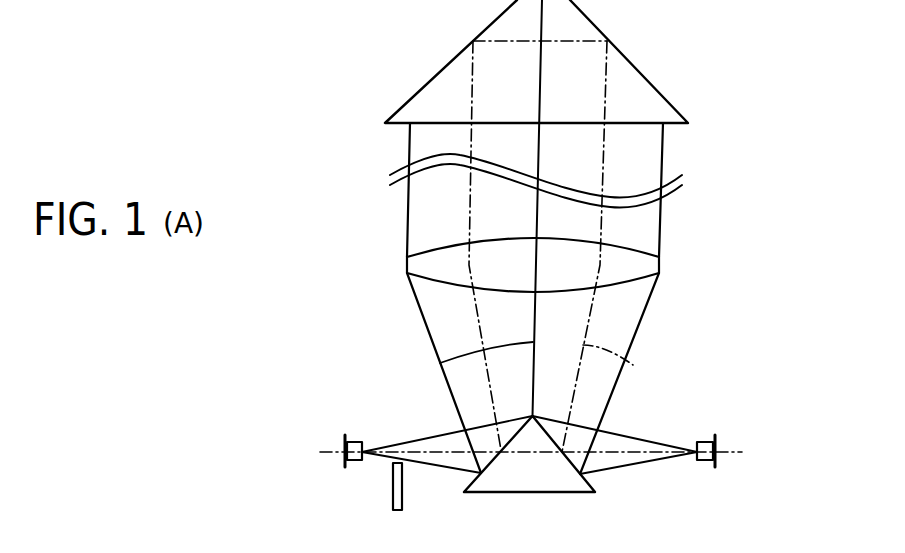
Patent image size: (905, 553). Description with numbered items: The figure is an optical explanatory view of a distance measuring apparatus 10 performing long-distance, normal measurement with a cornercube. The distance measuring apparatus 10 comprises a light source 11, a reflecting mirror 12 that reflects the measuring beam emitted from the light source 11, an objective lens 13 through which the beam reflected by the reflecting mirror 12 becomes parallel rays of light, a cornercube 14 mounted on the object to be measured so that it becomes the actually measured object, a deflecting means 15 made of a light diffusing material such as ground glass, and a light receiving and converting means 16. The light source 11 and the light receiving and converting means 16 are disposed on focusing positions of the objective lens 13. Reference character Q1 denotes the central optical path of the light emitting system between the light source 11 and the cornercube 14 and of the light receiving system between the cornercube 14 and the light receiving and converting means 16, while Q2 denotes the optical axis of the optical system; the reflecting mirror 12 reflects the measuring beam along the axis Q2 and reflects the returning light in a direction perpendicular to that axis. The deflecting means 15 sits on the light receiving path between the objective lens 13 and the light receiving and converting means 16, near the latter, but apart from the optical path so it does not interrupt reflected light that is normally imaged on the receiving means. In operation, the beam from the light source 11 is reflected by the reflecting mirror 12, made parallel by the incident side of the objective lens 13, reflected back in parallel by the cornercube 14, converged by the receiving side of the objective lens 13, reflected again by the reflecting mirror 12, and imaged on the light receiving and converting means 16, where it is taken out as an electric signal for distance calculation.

The distance measuring apparatus 10 is at (760, 283).
The light source 11 is at (701, 440).
The reflecting mirror 12 is at (550, 483).
The objective lens 13 is at (647, 267).
The cornercube 14 is at (657, 90).
The deflecting means 15 is at (393, 505).
The light receiving and converting means 16 is at (355, 440).
The central optical path Q1 is at (633, 365).
The optical axis Q2 is at (440, 363).